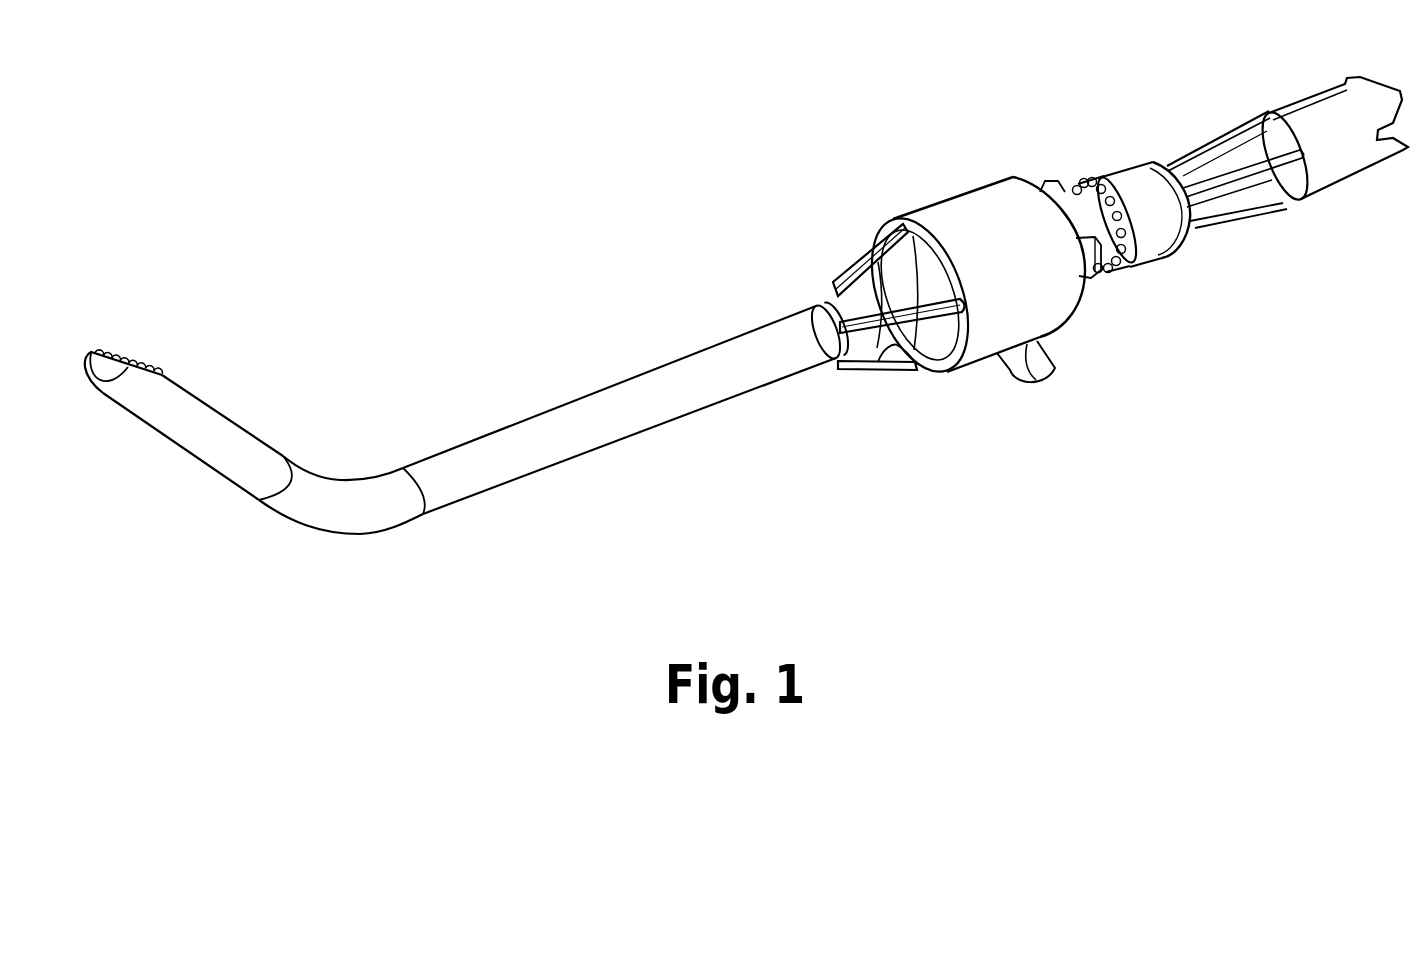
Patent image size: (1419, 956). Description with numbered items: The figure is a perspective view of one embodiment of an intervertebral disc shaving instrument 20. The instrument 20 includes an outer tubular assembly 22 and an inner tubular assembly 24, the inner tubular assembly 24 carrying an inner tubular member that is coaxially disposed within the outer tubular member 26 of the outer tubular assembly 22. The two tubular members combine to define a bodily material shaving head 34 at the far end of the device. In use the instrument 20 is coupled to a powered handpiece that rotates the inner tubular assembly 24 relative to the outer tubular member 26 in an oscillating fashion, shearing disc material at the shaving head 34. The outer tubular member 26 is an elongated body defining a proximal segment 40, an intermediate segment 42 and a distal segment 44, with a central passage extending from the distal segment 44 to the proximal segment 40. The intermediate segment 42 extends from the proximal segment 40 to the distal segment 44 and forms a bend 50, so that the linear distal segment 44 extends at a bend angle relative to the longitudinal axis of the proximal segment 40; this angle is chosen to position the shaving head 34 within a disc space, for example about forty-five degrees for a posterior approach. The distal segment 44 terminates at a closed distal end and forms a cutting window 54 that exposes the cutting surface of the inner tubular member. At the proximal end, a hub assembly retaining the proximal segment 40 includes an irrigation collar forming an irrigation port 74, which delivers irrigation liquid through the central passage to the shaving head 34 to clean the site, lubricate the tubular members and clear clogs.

The intervertebral disc shaving instrument 20 is at (580, 199).
The outer tubular assembly 22 is at (479, 418).
The inner tubular assembly 24 is at (1188, 125).
The outer tubular member 26 is at (646, 432).
The bodily material shaving head 34 is at (133, 338).
The proximal segment 40 is at (818, 342).
The intermediate segment 42 is at (465, 488).
The distal segment 44 is at (227, 442).
The bend 50 is at (345, 530).
The cutting window 54 is at (132, 390).
The irrigation port 74 is at (1038, 377).